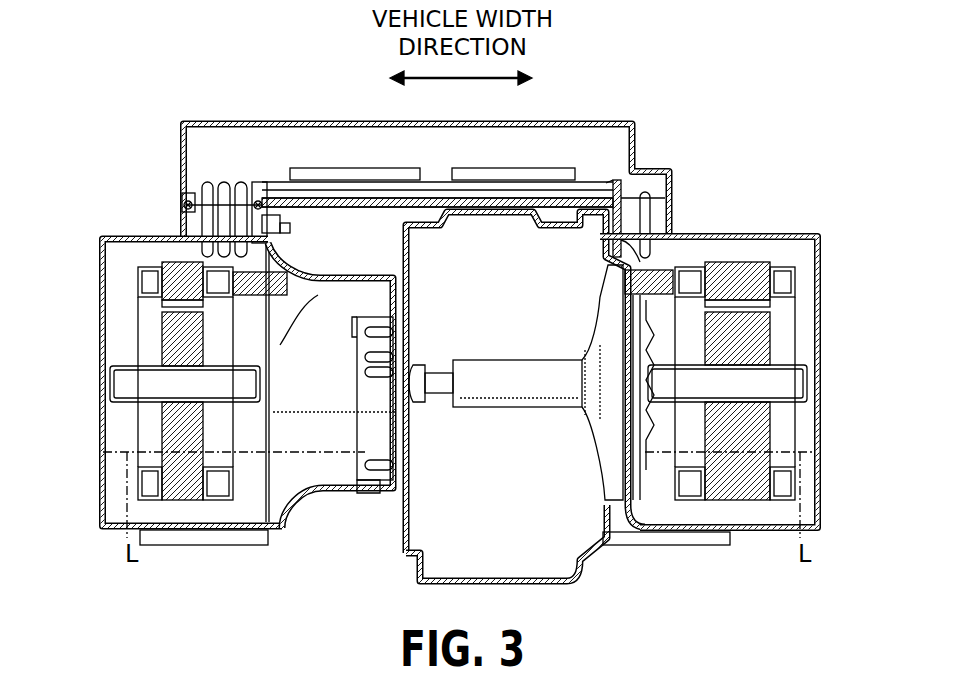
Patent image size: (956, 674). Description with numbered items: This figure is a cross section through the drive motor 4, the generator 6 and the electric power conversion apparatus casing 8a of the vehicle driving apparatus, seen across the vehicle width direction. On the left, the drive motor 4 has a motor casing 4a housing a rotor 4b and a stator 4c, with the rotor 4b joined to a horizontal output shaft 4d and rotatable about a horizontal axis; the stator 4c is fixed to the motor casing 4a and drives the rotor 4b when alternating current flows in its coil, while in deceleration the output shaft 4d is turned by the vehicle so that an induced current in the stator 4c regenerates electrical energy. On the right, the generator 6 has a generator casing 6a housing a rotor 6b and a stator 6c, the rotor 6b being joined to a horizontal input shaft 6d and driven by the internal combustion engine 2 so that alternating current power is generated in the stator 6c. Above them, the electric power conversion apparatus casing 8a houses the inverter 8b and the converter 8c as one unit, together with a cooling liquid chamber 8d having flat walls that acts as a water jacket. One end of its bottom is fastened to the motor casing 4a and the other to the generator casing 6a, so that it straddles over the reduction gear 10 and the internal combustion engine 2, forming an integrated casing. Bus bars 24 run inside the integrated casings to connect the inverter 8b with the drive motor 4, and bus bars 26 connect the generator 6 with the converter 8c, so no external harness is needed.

The internal combustion engine 2 is at (580, 560).
The drive motor 4 is at (166, 340).
The motor casing 4a is at (125, 440).
The rotor 4b is at (160, 350).
The stator 4c is at (160, 285).
The output shaft 4d is at (120, 386).
The generator 6 is at (738, 363).
The generator casing 6a is at (777, 510).
The rotor 6b is at (772, 348).
The stator 6c is at (770, 318).
The input shaft 6d is at (797, 383).
The electric power conversion apparatus casing 8a is at (219, 120).
The inverter 8b is at (358, 168).
The converter 8c is at (512, 168).
The cooling liquid chamber 8d is at (608, 184).
The reduction gear 10 is at (330, 440).
The bus bars 24 is at (200, 208).
The bus bars 26 is at (650, 218).